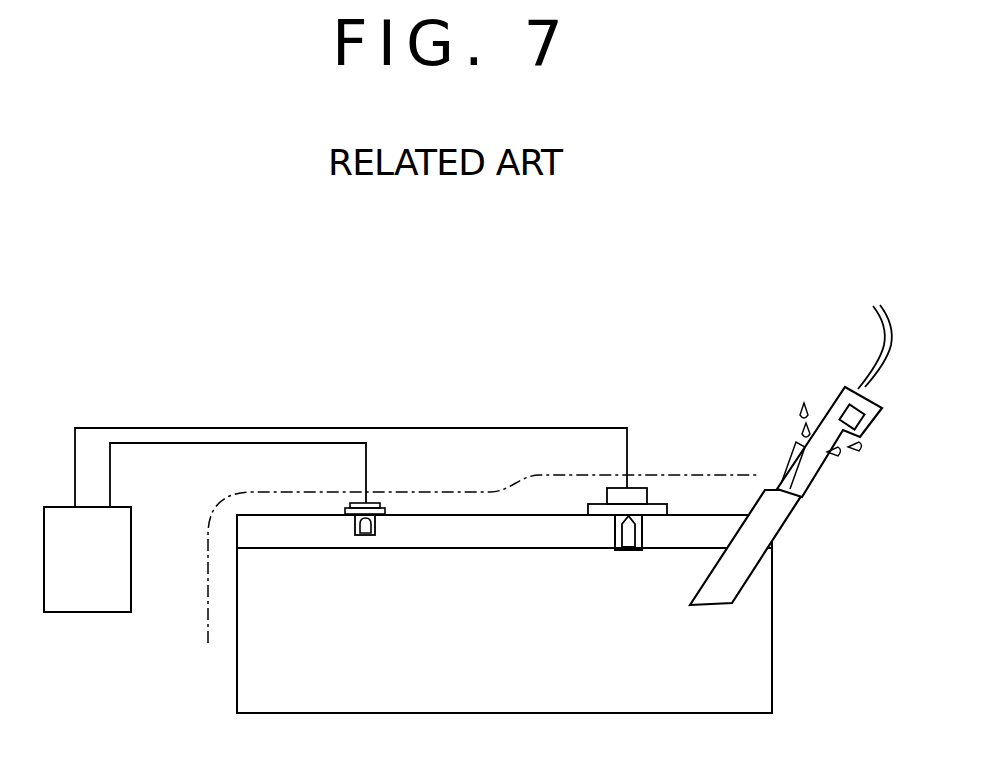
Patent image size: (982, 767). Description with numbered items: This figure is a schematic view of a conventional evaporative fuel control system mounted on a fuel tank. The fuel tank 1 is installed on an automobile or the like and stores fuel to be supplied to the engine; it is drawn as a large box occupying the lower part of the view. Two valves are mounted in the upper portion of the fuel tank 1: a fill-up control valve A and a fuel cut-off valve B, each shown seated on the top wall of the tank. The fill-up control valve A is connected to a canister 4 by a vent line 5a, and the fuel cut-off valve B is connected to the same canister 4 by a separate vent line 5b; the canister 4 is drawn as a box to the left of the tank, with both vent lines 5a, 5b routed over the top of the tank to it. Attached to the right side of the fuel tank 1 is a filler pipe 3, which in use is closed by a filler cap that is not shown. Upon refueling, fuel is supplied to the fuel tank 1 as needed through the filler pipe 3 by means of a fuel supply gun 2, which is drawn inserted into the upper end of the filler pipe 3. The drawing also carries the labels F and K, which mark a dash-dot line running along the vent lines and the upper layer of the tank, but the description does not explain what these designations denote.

The fuel tank 1 is at (496, 647).
The fuel supply gun 2 is at (835, 400).
The filler pipe 3 is at (790, 500).
The canister 4 is at (97, 577).
The vent line 5a is at (394, 428).
The vent line 5b is at (228, 443).
The fill-up control valve A is at (647, 488).
The fuel cut-off valve B is at (380, 505).
The imaginary line F (wire path) F is at (731, 473).
The cover layer K is at (505, 547).